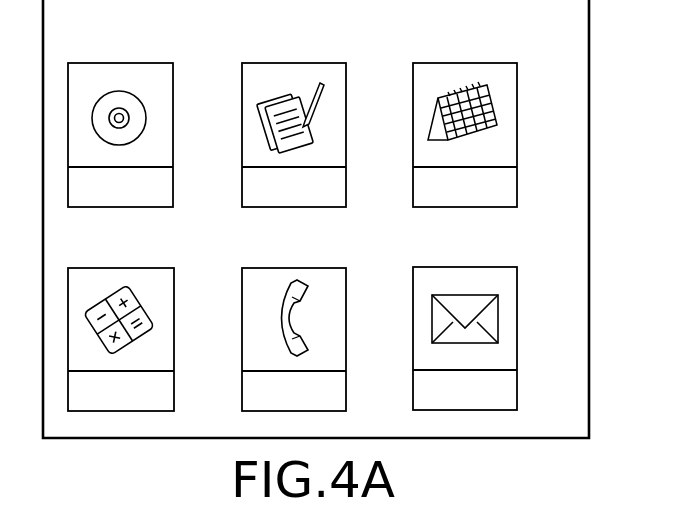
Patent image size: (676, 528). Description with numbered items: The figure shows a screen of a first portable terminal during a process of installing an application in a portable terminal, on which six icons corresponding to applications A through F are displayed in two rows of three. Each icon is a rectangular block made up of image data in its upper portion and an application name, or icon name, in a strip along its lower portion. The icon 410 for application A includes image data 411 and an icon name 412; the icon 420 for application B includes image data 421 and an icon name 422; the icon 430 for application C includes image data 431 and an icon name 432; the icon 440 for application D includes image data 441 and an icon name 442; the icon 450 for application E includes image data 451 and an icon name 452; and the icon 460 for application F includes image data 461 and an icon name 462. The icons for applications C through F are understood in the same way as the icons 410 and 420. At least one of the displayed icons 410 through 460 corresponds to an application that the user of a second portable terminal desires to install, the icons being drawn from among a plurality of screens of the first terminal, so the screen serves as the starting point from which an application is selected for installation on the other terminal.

The icon 410 is at (119, 62).
The image data 411 is at (173, 115).
The icon name 412 is at (173, 188).
The icon 420 is at (291, 62).
The image data 421 is at (346, 115).
The icon name 422 is at (346, 188).
The icon 430 is at (464, 62).
The image data 431 is at (517, 115).
The icon name 432 is at (517, 188).
The icon 440 is at (119, 267).
The image data 441 is at (174, 320).
The icon name 442 is at (174, 392).
The icon 450 is at (291, 267).
The image data 451 is at (346, 320).
The icon name 452 is at (346, 392).
The icon 460 is at (464, 267).
The image data 461 is at (517, 320).
The icon name 462 is at (517, 392).